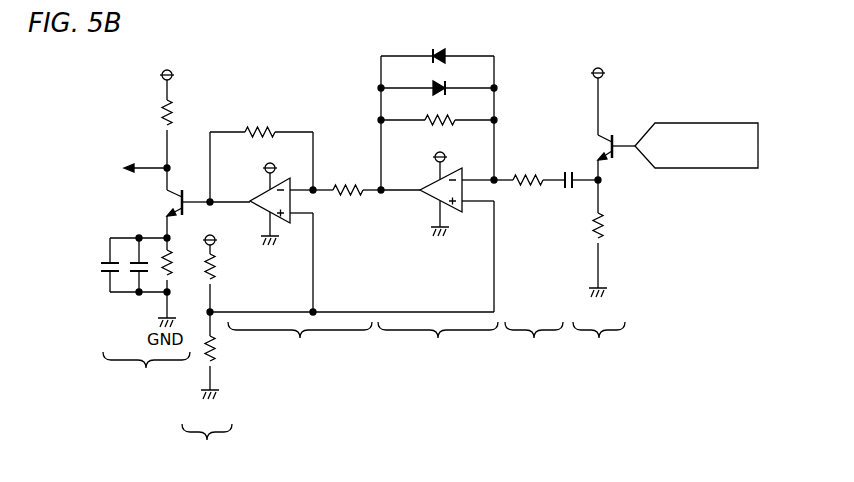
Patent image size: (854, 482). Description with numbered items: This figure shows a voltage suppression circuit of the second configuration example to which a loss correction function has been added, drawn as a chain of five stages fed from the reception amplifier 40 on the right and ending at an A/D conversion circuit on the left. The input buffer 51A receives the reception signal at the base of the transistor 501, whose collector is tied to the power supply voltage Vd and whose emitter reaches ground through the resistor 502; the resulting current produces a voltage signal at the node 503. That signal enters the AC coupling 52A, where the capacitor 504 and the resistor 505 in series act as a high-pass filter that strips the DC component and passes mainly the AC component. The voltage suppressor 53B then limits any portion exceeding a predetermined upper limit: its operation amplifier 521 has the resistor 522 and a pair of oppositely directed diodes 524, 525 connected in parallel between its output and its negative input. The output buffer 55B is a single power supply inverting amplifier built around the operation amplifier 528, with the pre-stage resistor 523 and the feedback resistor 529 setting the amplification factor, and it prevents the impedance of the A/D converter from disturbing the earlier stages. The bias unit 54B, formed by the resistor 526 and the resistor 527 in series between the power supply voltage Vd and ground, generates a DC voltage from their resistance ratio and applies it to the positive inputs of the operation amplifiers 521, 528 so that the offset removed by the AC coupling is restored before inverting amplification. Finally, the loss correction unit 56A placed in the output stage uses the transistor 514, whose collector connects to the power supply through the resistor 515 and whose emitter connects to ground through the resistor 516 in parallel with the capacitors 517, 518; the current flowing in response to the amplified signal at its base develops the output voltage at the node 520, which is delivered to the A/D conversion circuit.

The resistor 515 is at (174, 118).
The node 520 is at (165, 164).
The transistor 514 is at (193, 183).
The resistor 516 is at (162, 255).
The capacitor 518 is at (106, 262).
The capacitor 517 is at (137, 275).
The resistor 526 is at (217, 282).
The resistor 527 is at (217, 358).
The resistor 529 is at (262, 126).
The operation amplifier 528 is at (262, 193).
The resistor 523 is at (340, 185).
The operation amplifier 521 is at (430, 199).
The diode 525 is at (437, 50).
The diode 524 is at (441, 83).
The resistor 522 is at (442, 116).
The resistor 505 is at (524, 171).
The capacitor 504 is at (568, 171).
The node 503 is at (602, 181).
The transistor 501 is at (614, 139).
The resistor 502 is at (606, 229).
The reception amplifier 40 is at (723, 127).
The loss correction unit 56A is at (146, 370).
The bias unit 54B is at (207, 441).
The output buffer 55B is at (300, 340).
The voltage suppressor 53B is at (438, 340).
The AC coupling 52A is at (534, 340).
The input buffer 51A is at (599, 340).